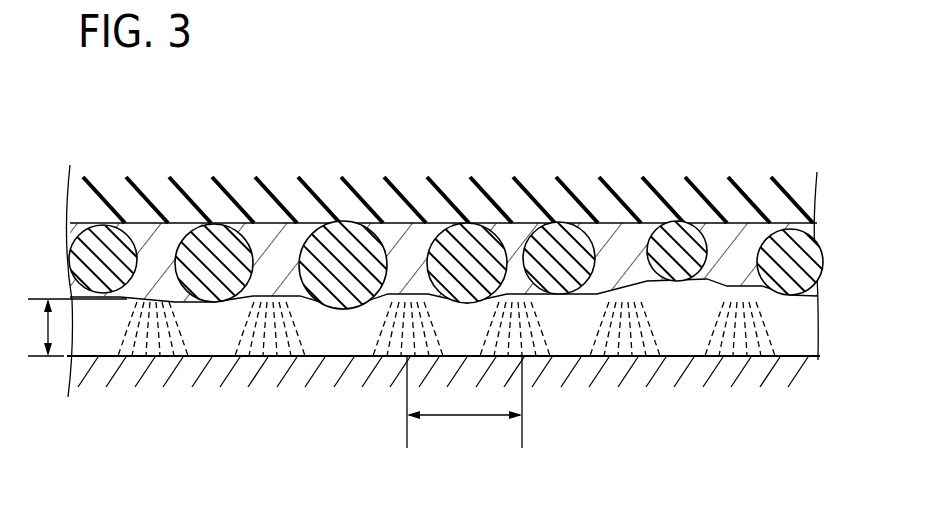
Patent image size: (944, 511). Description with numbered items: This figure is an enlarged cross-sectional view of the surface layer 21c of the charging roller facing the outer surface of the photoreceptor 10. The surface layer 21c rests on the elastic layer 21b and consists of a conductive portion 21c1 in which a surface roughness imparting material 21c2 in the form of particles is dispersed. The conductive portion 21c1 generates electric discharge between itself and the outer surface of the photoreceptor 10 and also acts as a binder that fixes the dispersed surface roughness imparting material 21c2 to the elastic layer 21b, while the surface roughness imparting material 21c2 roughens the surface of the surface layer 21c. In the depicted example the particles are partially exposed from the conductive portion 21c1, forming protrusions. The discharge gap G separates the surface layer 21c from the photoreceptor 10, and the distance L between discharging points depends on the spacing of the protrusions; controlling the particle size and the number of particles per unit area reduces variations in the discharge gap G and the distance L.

The elastic layer 21b is at (852, 168).
The surface layer 21c is at (820, 225).
The conductive portion 21c1 is at (743, 242).
The surface roughness imparting material 21c2 is at (216, 257).
The photoreceptor 10 is at (804, 357).
The discharge gap G is at (75, 327).
The distance between discharging points L is at (464, 404).